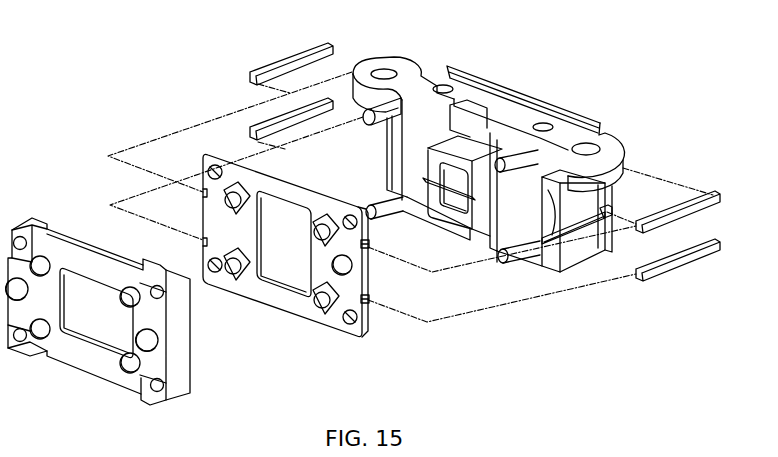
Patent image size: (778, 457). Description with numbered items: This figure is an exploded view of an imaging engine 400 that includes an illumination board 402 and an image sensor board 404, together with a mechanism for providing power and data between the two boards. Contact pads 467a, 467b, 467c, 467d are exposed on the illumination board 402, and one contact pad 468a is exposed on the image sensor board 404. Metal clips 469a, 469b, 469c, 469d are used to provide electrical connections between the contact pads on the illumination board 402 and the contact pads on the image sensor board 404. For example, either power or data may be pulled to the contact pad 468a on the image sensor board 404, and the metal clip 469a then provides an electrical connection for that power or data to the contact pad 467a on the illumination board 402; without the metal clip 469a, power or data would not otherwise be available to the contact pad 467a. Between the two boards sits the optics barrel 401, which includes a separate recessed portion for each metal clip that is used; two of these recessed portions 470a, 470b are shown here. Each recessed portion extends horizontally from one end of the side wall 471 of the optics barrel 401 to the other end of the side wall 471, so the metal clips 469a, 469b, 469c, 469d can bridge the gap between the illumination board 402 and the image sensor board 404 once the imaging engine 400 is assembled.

The imaging engine 400 is at (134, 66).
The optics barrel 401 is at (385, 157).
The illumination board 402 is at (275, 305).
The image sensor board 404 is at (545, 103).
The contact pad 467a is at (370, 296).
The contact pad 467b is at (370, 244).
The contact pad 467c is at (203, 241).
The contact pad 467d is at (203, 194).
The contact pad 468a is at (607, 212).
The metal clip 469a is at (679, 268).
The metal clip 469b is at (683, 213).
The metal clip 469c is at (289, 109).
The metal clip 469d is at (293, 56).
The recessed portion 470a is at (574, 232).
The recessed portion 470b is at (551, 200).
The side wall 471 is at (622, 193).